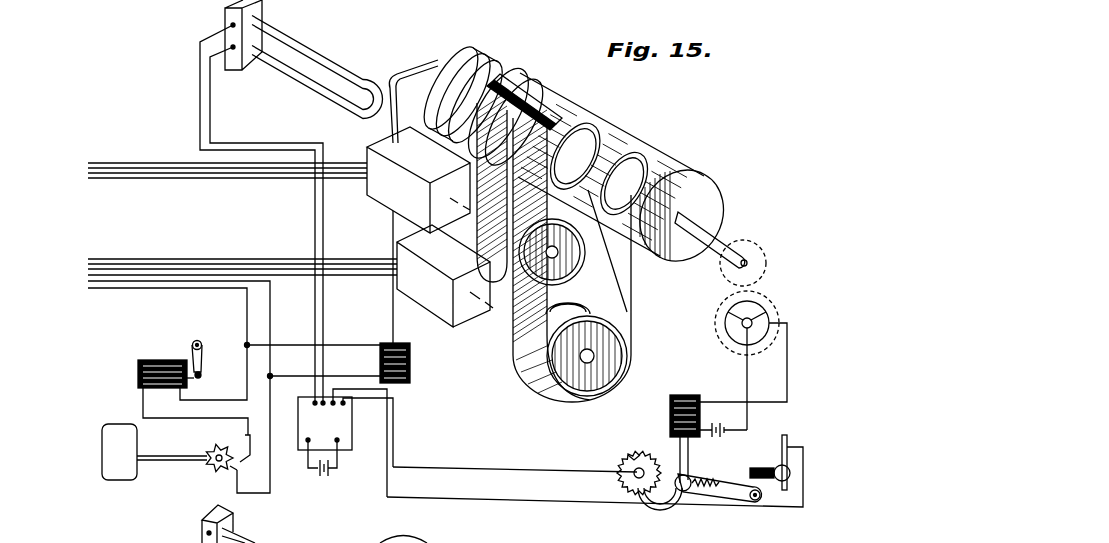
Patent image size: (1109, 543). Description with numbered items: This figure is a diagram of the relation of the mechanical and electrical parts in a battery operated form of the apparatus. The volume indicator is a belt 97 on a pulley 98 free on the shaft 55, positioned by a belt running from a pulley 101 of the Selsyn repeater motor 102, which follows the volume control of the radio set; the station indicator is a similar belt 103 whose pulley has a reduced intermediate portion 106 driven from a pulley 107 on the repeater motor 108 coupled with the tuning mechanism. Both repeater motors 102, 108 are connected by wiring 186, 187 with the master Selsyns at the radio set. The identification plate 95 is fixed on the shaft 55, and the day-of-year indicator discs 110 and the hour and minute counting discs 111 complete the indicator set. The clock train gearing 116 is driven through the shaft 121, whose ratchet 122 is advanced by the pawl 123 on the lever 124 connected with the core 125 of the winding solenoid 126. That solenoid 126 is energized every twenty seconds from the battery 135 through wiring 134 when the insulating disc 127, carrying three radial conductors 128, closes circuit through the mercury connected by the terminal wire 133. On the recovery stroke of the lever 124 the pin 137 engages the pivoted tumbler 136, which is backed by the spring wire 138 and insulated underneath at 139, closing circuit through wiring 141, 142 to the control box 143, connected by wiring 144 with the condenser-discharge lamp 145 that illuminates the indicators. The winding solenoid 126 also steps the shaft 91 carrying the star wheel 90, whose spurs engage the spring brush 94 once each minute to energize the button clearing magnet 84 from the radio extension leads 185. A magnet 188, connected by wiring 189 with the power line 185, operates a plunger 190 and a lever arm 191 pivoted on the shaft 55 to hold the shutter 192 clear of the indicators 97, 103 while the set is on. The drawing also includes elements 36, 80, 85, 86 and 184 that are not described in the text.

The motor 36 is at (122, 451).
The shaft 55 is at (705, 232).
The relay armature pivot 80 is at (197, 340).
The key or button clearing magnet 84 is at (178, 350).
The relay contact 85 is at (190, 381).
The armature contact 86 is at (204, 357).
The star wheel 90 is at (212, 467).
The intermittently turned shaft 91 is at (210, 450).
The spring brush 94 is at (246, 461).
The plate 95 is at (433, 62).
The belt 97 is at (540, 82).
The pulley 98 is at (492, 187).
The pulley 101 is at (552, 252).
The repeater motor 102 is at (418, 180).
The belt 103 is at (515, 333).
The reduced intermediate portion 106 is at (576, 309).
The pulley 107 is at (573, 397).
The repeater motor 108 is at (445, 276).
The indicator discs 110 is at (615, 146).
The hour and minute counting discs 111 is at (657, 172).
The gearing 116 is at (762, 285).
The shaft 121 is at (628, 478).
The ratchet 122 is at (630, 456).
The pawl 123 is at (683, 497).
The lever 124 is at (717, 475).
The core 125 is at (678, 447).
The winding solenoid 126 is at (683, 395).
The insulating disc 127 is at (766, 309).
The conductors 128 is at (727, 327).
The terminal wire 133 is at (790, 340).
The wiring 134 is at (765, 382).
The battery 135 is at (727, 421).
The pivoted tumbler 136 is at (769, 461).
The pin or roll 137 is at (748, 502).
The spring wire 138 is at (797, 425).
The insulation 139 is at (763, 480).
The wiring 141 is at (558, 473).
The wiring 142 is at (667, 508).
The control box 143 is at (330, 428).
The wiring 144 is at (200, 103).
The lamp 145 is at (326, 62).
The battery 184 is at (322, 472).
The power lines 185 is at (84, 292).
The wiring 186 is at (88, 154).
The wiring 187 is at (88, 250).
The magnet 188 is at (412, 366).
The wiring 189 is at (350, 370).
The plunger 190 is at (395, 322).
The lever arm 191 is at (410, 78).
The shutter 192 is at (517, 80).